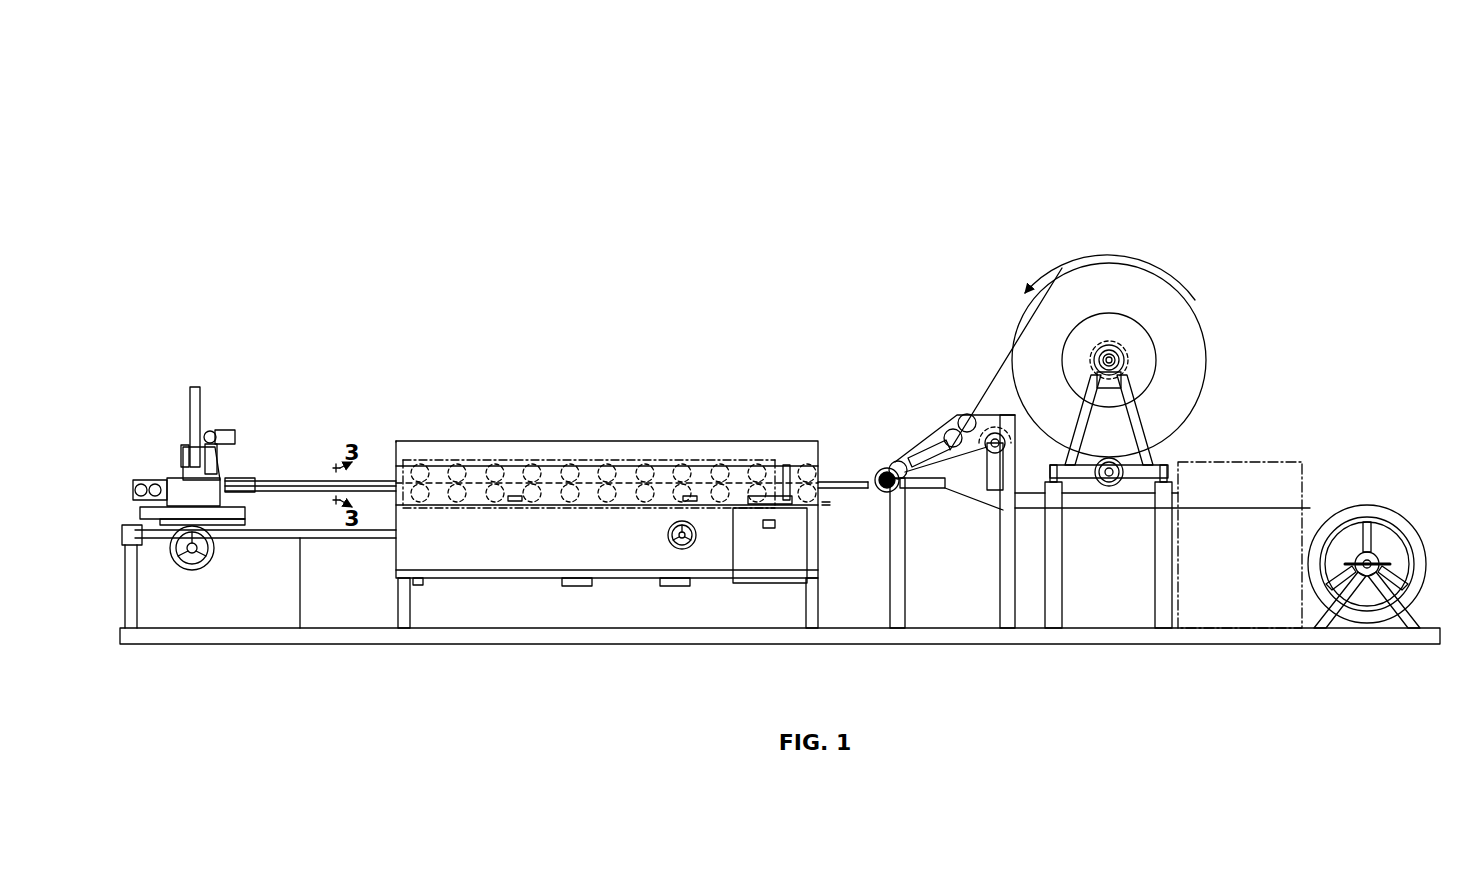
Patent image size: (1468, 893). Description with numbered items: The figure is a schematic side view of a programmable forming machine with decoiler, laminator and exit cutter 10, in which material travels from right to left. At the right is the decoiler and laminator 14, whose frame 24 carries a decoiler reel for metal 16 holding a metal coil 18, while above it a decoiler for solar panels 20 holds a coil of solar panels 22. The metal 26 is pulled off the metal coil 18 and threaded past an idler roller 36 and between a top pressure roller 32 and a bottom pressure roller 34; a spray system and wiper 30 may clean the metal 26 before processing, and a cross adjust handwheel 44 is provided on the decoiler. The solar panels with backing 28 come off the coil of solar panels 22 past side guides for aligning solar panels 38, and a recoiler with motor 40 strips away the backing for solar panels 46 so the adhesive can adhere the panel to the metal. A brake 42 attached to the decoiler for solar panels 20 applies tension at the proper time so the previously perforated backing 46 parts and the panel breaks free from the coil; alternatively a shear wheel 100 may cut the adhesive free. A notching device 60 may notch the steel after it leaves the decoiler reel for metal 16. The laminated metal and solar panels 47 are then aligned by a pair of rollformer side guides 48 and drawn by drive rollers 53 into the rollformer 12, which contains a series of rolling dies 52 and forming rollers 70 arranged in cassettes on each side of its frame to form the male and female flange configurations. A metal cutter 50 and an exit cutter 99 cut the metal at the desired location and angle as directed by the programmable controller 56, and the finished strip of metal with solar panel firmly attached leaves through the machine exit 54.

The programmable forming machine with decoiler, laminator and exit cutter 10 is at (402, 355).
The rollformer 12 is at (480, 440).
The decoiler and laminator 14 is at (980, 285).
The decoiler reel for metal 16 is at (1375, 517).
The metal coil 18 is at (1355, 515).
The decoiler for solar panels 20 is at (1125, 345).
The coil of solar panels 22 is at (1060, 280).
The frame for decoiler and laminator 24 is at (1140, 425).
The metal 26 is at (1318, 505).
The solar panels with backing 28 is at (1000, 370).
The spray system and wiper 30 is at (1163, 505).
The top pressure roller 32 is at (925, 448).
The bottom pressure roller 34 is at (885, 495).
The idler roller 36 is at (890, 470).
The side guides for aligning solar panels 38 is at (938, 478).
The recoiler with motor 40 is at (967, 413).
The brake 42 is at (1135, 420).
The cross adjust handwheel 44 is at (1120, 460).
The backing for solar panels 46 is at (975, 430).
The laminated metal and solar panels 47 is at (862, 480).
The rollformer side guides 48 is at (812, 462).
The metal cutter 50 is at (760, 462).
The rolling dies 52 is at (572, 462).
The drive rollers 53 is at (787, 462).
The machine exit 54 is at (386, 458).
The programmable controller 56 is at (785, 525).
The notching device 60 is at (1275, 458).
The forming rollers 70 is at (520, 460).
The exit cutter 99 is at (215, 430).
The shear wheel 100 is at (178, 400).